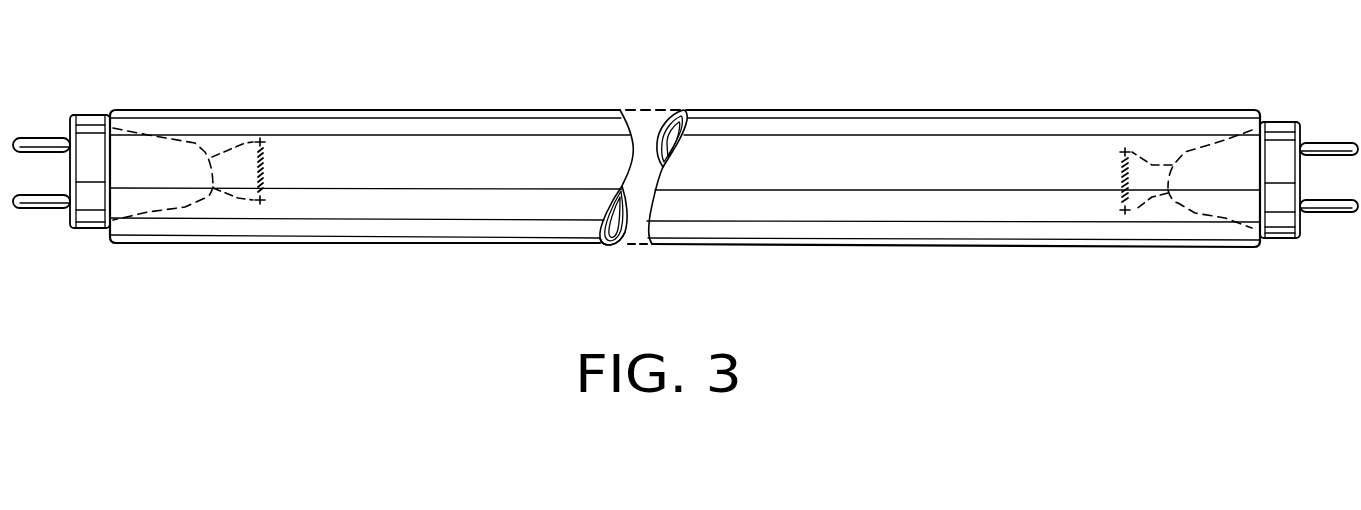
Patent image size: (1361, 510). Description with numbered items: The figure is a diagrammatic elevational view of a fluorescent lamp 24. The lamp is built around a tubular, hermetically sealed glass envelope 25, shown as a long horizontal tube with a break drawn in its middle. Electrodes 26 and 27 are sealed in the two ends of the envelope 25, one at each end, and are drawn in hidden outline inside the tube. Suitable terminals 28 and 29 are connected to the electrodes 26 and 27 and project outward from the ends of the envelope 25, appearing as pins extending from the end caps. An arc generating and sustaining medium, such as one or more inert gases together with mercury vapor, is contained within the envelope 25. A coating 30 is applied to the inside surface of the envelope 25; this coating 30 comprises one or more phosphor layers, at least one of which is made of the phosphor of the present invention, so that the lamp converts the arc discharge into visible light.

The fluorescent lamp 24 is at (736, 68).
The glass envelope 25 is at (820, 109).
The electrode 26 is at (285, 148).
The electrode 27 is at (1115, 160).
The terminal 28 is at (40, 138).
The terminal 29 is at (1340, 143).
The coating 30 is at (622, 248).